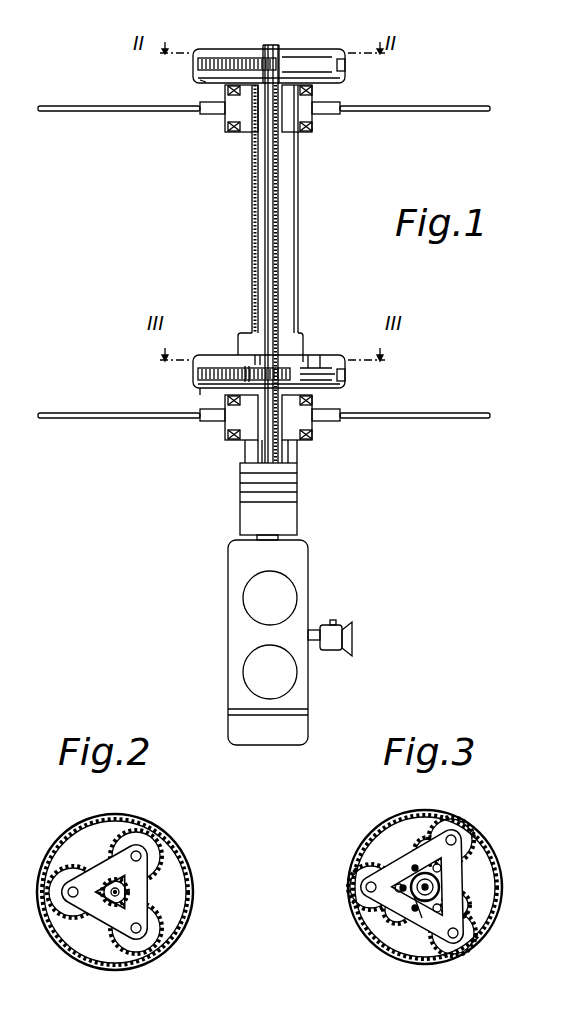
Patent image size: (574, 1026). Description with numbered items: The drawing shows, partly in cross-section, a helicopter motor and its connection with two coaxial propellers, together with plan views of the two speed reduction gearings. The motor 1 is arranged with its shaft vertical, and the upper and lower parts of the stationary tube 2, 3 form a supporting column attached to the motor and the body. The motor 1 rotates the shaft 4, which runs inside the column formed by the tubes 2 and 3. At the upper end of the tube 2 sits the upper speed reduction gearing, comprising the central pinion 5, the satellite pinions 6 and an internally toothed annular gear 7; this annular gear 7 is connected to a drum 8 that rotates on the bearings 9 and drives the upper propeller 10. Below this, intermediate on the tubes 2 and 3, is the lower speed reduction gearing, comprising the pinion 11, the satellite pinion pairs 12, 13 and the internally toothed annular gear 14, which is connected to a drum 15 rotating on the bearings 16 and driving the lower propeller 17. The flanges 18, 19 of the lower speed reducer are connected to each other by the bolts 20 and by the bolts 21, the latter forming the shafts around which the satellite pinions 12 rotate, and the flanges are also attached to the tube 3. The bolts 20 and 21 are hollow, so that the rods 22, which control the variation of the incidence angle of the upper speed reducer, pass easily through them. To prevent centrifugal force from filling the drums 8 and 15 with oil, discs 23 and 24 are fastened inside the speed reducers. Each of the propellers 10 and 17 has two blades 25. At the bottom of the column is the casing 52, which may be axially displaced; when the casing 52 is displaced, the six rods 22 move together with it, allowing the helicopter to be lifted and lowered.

In FIG. 1, the motor 1 is at (310, 556).
In FIG. 1, the upper part of the stationary tube 2 is at (281, 240).
In FIG. 1, the lower part of the stationary tube 3 is at (273, 447).
In FIG. 1, the shaft 4 is at (266, 200).
In FIG. 1, the central pinion 5 is at (286, 58).
In FIG. 2, the central pinion 5 is at (130, 890).
In FIG. 1, the satellite pinions 6 is at (196, 68).
In FIG. 2, the satellite pinions 6 is at (165, 842).
In FIG. 1, the internally toothed annular gear 7 is at (346, 68).
In FIG. 2, the internally toothed annular gear 7 is at (62, 838).
In FIG. 1, the drum 8 is at (345, 80).
In FIG. 2, the drum 8 is at (42, 865).
In FIG. 1, the bearings 9 is at (232, 130).
In FIG. 1, the upper propeller 10 is at (262, 50).
In FIG. 1, the pinion 11 is at (258, 363).
In FIG. 3, the pinion 11 is at (424, 905).
In FIG. 1, the satellite pinions 12 is at (242, 374).
In FIG. 3, the satellite pinions 12 is at (425, 850).
In FIG. 1, the satellite pinions 13 is at (196, 374).
In FIG. 3, the satellite pinions 13 is at (468, 845).
In FIG. 1, the internally toothed annular gear 14 is at (346, 374).
In FIG. 3, the internally toothed annular gear 14 is at (498, 856).
In FIG. 1, the drum 15 is at (202, 396).
In FIG. 3, the drum 15 is at (450, 830).
In FIG. 1, the bearings 16 is at (230, 437).
In FIG. 1, the lower propeller 17 is at (306, 363).
In FIG. 1, the flange 18 is at (318, 363).
In FIG. 3, the flange 18 is at (414, 925).
In FIG. 1, the flange 19 is at (330, 386).
In FIG. 3, the bolts 20 is at (433, 868).
In FIG. 3, the bolts 21 is at (412, 867).
In FIG. 1, the rods 22 is at (300, 178).
In FIG. 3, the rods 22 is at (450, 887).
In FIG. 1, the disc 23 is at (195, 80).
In FIG. 1, the disc 24 is at (195, 386).
In FIG. 1, the blades 25 is at (90, 106).
In FIG. 1, the casing 52 is at (238, 499).